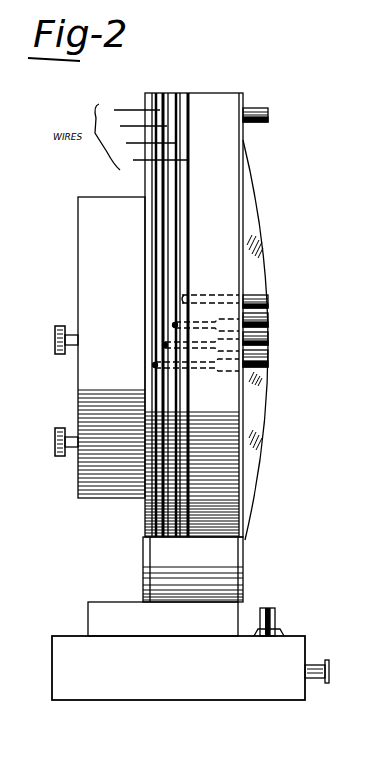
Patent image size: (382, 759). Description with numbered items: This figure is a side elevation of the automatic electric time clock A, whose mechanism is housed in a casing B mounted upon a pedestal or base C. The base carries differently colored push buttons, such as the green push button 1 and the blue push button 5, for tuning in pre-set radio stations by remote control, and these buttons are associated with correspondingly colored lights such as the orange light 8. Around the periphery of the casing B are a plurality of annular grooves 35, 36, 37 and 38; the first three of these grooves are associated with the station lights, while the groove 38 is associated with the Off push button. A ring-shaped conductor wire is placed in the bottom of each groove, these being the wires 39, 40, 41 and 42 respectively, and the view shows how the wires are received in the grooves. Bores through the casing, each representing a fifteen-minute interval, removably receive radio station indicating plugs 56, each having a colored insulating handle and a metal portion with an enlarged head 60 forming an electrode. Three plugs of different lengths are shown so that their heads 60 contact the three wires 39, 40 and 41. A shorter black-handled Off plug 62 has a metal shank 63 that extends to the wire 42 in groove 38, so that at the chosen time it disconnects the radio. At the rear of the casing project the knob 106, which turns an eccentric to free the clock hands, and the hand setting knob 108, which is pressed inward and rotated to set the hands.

The push button 1 is at (264, 610).
The push button 5 is at (50, 195).
The light 8 is at (152, 92).
The annular groove 35 is at (147, 93).
The annular groove 36 is at (164, 93).
The annular groove 37 is at (178, 93).
The annular groove 38 is at (189, 93).
The ring-shaped conductor wire 39 is at (128, 112).
The ring-shaped conductor wire 40 is at (135, 128).
The ring-shaped conductor wire 41 is at (142, 145).
The ring-shaped conductor wire 42 is at (151, 161).
The radio station indicating plug 56 is at (258, 110).
The enlarged head 60 is at (172, 323).
The Off plug 62 is at (258, 300).
The metal shank 63 is at (196, 295).
The knob 106 is at (57, 355).
The hand setting knob 108 is at (57, 457).
The automatic electric time clock A is at (221, 96).
The casing B is at (218, 152).
The pedestal or base C is at (88, 613).